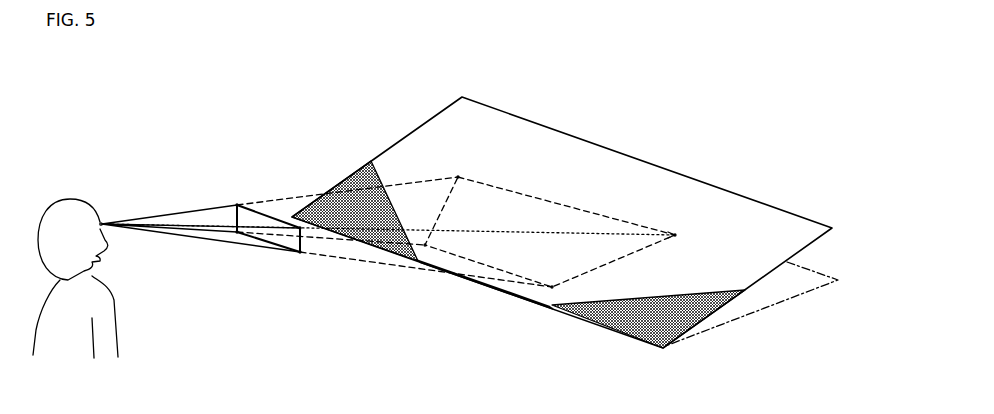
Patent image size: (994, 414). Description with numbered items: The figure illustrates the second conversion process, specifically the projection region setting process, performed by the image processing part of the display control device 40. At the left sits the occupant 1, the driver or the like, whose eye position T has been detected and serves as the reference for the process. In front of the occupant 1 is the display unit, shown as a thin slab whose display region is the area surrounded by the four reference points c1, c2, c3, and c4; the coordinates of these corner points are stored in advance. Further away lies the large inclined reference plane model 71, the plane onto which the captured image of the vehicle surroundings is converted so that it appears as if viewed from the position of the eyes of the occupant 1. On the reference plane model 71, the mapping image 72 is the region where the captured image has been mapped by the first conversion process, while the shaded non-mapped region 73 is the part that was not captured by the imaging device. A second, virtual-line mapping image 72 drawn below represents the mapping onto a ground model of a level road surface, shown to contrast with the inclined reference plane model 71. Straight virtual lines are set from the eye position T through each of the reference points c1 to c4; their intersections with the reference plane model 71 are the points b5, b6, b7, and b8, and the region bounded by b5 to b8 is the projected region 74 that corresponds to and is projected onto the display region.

The occupant 1 is at (93, 275).
The eye position T is at (121, 206).
The display control device 40 is at (266, 213).
The reference point c1 is at (236, 204).
The reference point c2 is at (237, 234).
The reference point c3 is at (300, 254).
The reference point c4 is at (299, 226).
The reference plane model 71 is at (618, 119).
The mapping image 72 is at (723, 213).
The non-mapped region 73 is at (648, 325).
The projected region 74 is at (462, 277).
The intersection b5 is at (458, 176).
The intersection b6 is at (425, 248).
The intersection b7 is at (545, 303).
The intersection b8 is at (675, 228).